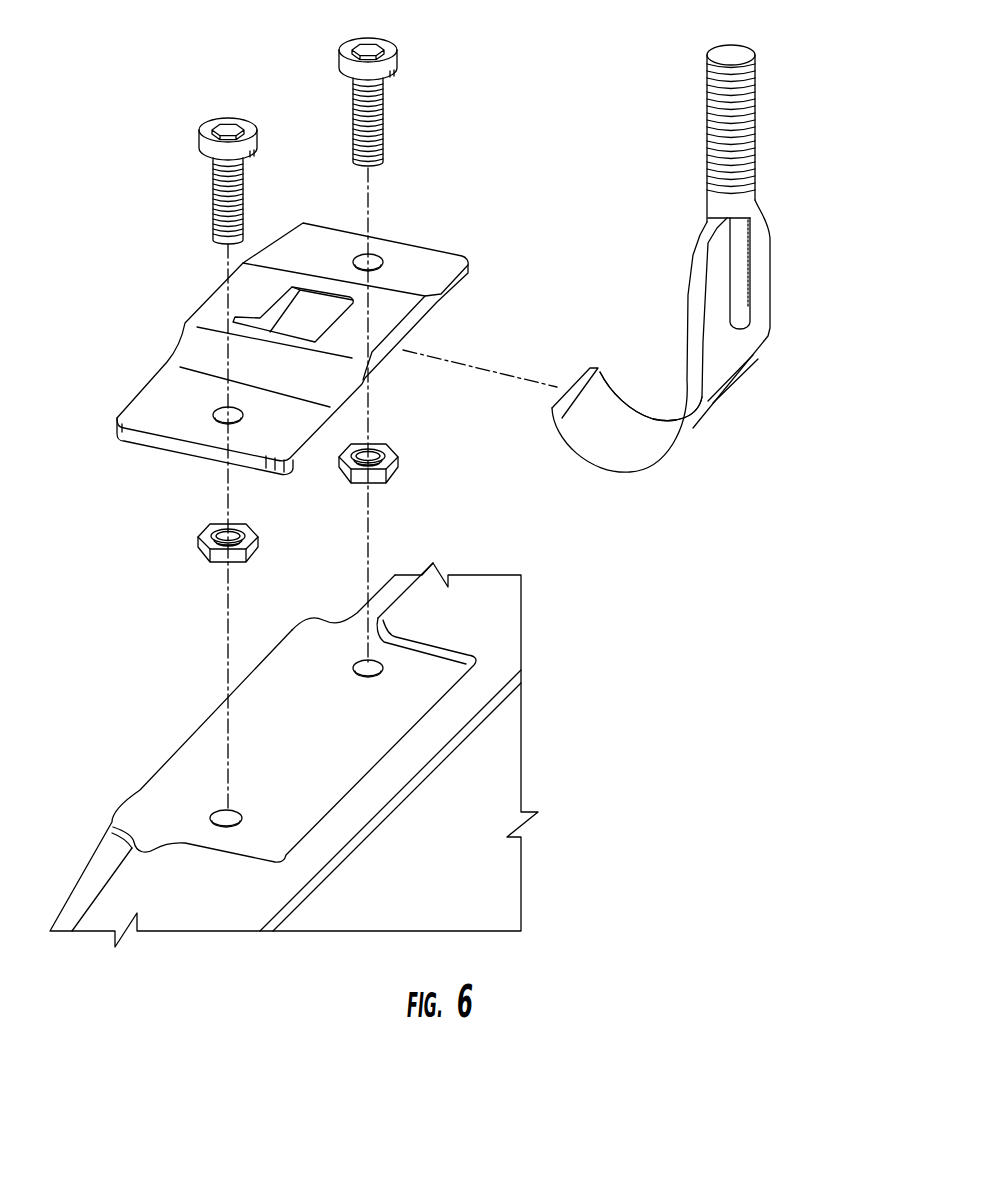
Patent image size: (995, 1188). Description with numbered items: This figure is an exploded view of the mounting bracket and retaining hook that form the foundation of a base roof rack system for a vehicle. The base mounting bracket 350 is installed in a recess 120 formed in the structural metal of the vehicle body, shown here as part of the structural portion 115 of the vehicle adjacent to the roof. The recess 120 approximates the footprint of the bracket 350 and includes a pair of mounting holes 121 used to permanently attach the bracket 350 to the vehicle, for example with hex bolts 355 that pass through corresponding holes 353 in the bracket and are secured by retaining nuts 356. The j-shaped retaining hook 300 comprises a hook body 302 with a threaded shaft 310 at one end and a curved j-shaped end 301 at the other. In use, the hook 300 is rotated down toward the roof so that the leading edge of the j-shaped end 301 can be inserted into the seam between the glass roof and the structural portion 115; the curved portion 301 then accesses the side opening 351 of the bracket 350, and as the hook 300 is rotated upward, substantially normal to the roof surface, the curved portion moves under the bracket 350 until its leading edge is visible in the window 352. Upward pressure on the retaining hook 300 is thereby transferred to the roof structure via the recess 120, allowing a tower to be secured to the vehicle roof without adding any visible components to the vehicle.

The structural portion 115 is at (459, 875).
The recess 120 is at (312, 741).
The mounting holes 121 is at (350, 665).
The j-shaped retaining hook 300 is at (708, 258).
The j-shaped end 301 is at (608, 413).
The hook 302 is at (698, 336).
The threaded shaft 310 is at (753, 110).
The base mounting bracket 350 is at (313, 390).
The side opening 351 is at (376, 372).
The window 352 is at (313, 317).
The holes 353 is at (362, 260).
The hex bolts 355 is at (205, 130).
The retaining nuts 356 is at (200, 552).